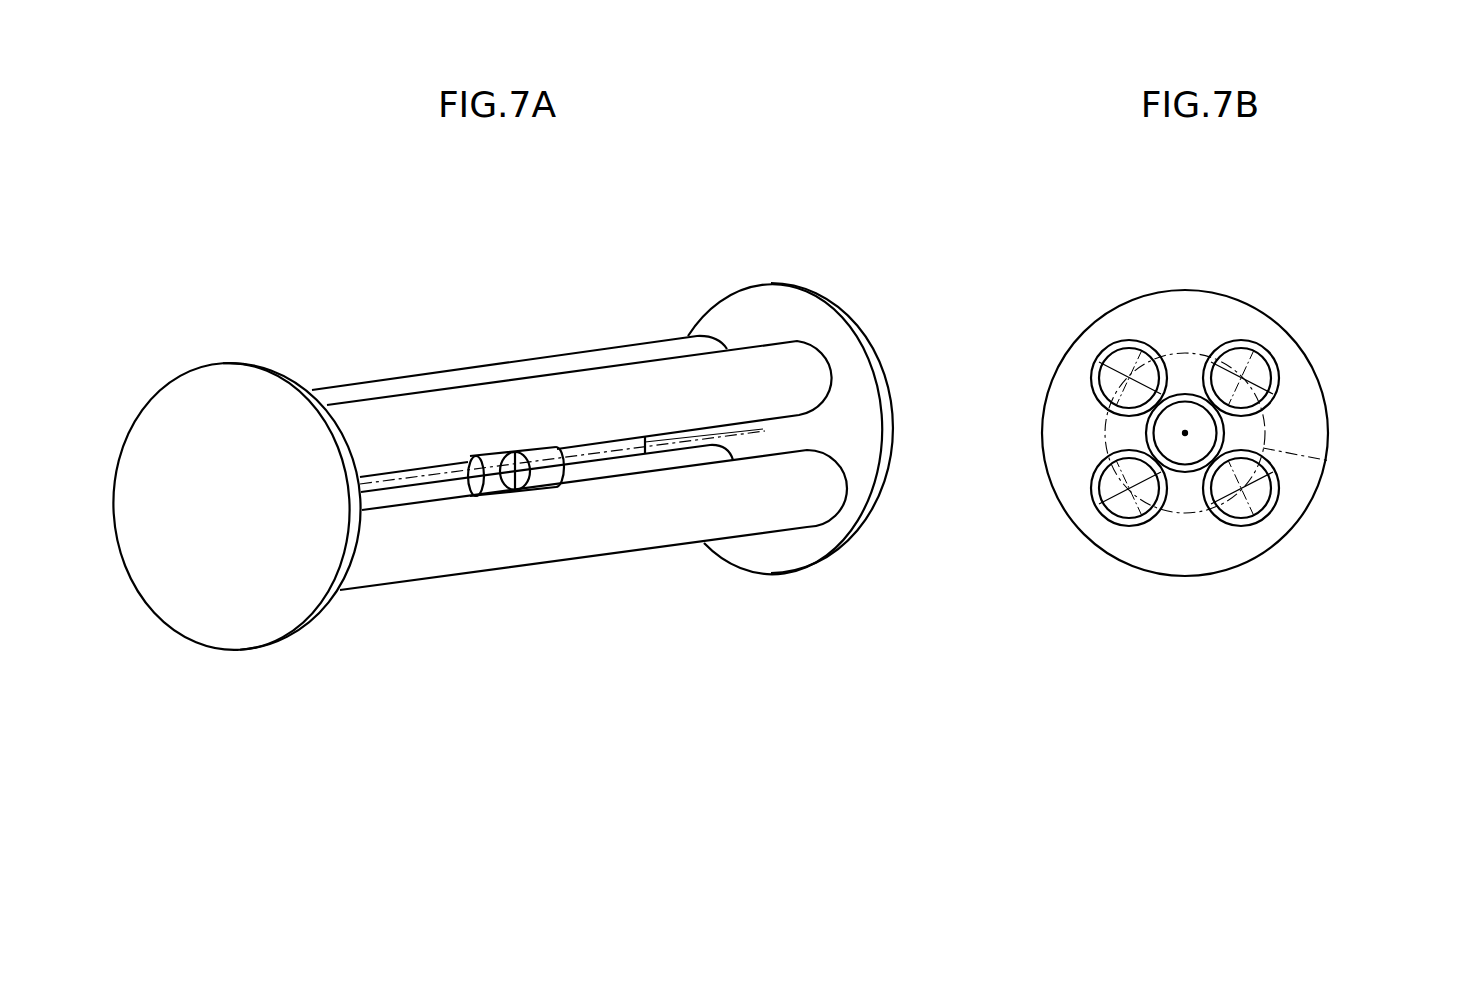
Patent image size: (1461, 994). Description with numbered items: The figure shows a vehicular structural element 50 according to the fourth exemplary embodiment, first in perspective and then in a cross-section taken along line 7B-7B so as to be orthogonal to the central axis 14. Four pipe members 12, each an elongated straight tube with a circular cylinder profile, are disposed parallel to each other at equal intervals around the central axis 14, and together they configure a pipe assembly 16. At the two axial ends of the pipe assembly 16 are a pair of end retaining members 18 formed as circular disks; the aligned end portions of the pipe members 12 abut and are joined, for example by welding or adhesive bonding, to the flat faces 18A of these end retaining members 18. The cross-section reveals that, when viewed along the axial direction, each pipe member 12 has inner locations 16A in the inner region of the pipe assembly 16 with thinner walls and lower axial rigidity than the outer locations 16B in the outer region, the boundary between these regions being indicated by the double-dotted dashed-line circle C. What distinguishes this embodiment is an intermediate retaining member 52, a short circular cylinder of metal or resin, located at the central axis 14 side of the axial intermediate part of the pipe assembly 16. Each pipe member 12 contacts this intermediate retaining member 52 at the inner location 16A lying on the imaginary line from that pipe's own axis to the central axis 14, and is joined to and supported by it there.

In FIG. 7A, the vehicular structural element 50 is at (651, 216).
In FIG. 7B, the vehicular structural element 50 is at (1403, 322).
In FIG. 7A, the pipe member 12 is at (579, 440).
In FIG. 7B, the pipe member 12 is at (1198, 438).
In FIG. 7A, the central axis 14 is at (589, 459).
In FIG. 7B, the central axis 14 is at (1187, 432).
In FIG. 7A, the pipe assembly 16 is at (568, 332).
In FIG. 7B, the pipe assembly 16 is at (1201, 445).
In FIG. 7B, the inner locations 16A is at (1099, 362).
In FIG. 7B, the outer locations 16B is at (1118, 340).
In FIG. 7A, the end retaining member 18 is at (218, 362).
In FIG. 7B, the end retaining member 18 is at (1155, 286).
In FIG. 7A, the flat face 18A is at (797, 551).
In FIG. 7A, the intermediate retaining member 52 is at (548, 474).
In FIG. 7B, the intermediate retaining member 52 is at (1185, 394).
In FIG. 7B, the double-dotted dashed-line circle C is at (1330, 461).
In FIG. 7A, the line 7B- 7B is at (455, 357).